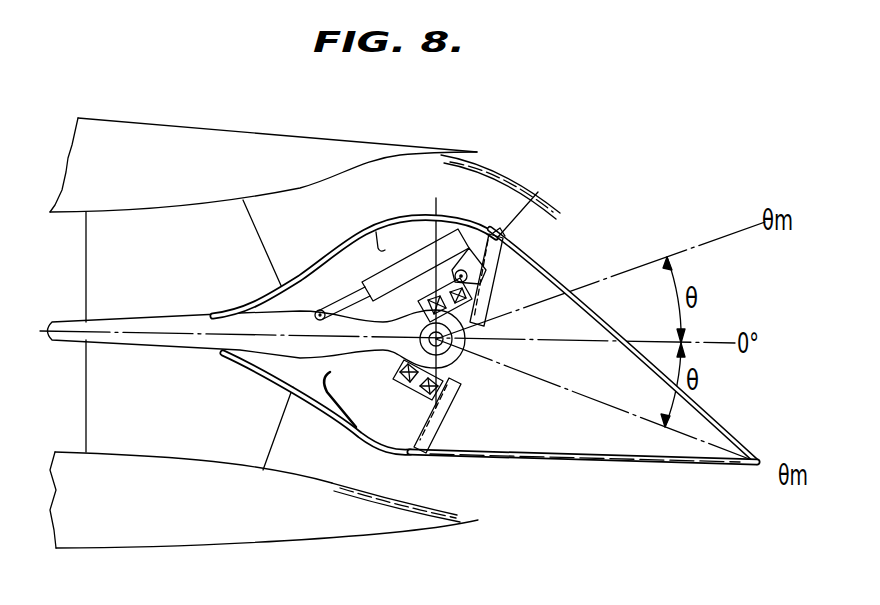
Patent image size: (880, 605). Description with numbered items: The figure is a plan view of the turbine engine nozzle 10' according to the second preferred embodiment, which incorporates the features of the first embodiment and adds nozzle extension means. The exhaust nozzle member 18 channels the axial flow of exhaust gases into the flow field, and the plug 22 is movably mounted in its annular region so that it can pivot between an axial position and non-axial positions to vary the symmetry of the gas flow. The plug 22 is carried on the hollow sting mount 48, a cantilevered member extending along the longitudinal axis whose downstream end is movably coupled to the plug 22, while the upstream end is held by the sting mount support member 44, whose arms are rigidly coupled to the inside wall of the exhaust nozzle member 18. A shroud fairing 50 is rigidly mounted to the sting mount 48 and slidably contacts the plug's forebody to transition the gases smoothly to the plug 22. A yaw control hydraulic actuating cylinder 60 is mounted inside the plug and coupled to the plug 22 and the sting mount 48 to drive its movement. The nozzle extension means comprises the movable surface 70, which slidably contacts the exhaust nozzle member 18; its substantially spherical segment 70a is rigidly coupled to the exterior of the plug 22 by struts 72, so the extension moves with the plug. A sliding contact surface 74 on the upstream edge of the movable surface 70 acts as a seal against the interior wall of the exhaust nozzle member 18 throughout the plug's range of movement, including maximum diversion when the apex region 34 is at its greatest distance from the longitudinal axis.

The turbine engine nozzle 10' is at (634, 107).
The exhaust nozzle member 18 is at (380, 148).
The plug 22 is at (575, 273).
The apex region 34 is at (765, 459).
The sting mount support member 44 is at (92, 264).
The sting mount 48 is at (158, 350).
The shroud fairing 50 is at (309, 275).
The yaw control hydraulic actuating cylinder 60 is at (410, 260).
The movable surface 70 is at (513, 182).
The spherical segment 70a is at (498, 237).
The struts 72 is at (517, 207).
The sliding contact surface 74 is at (462, 157).